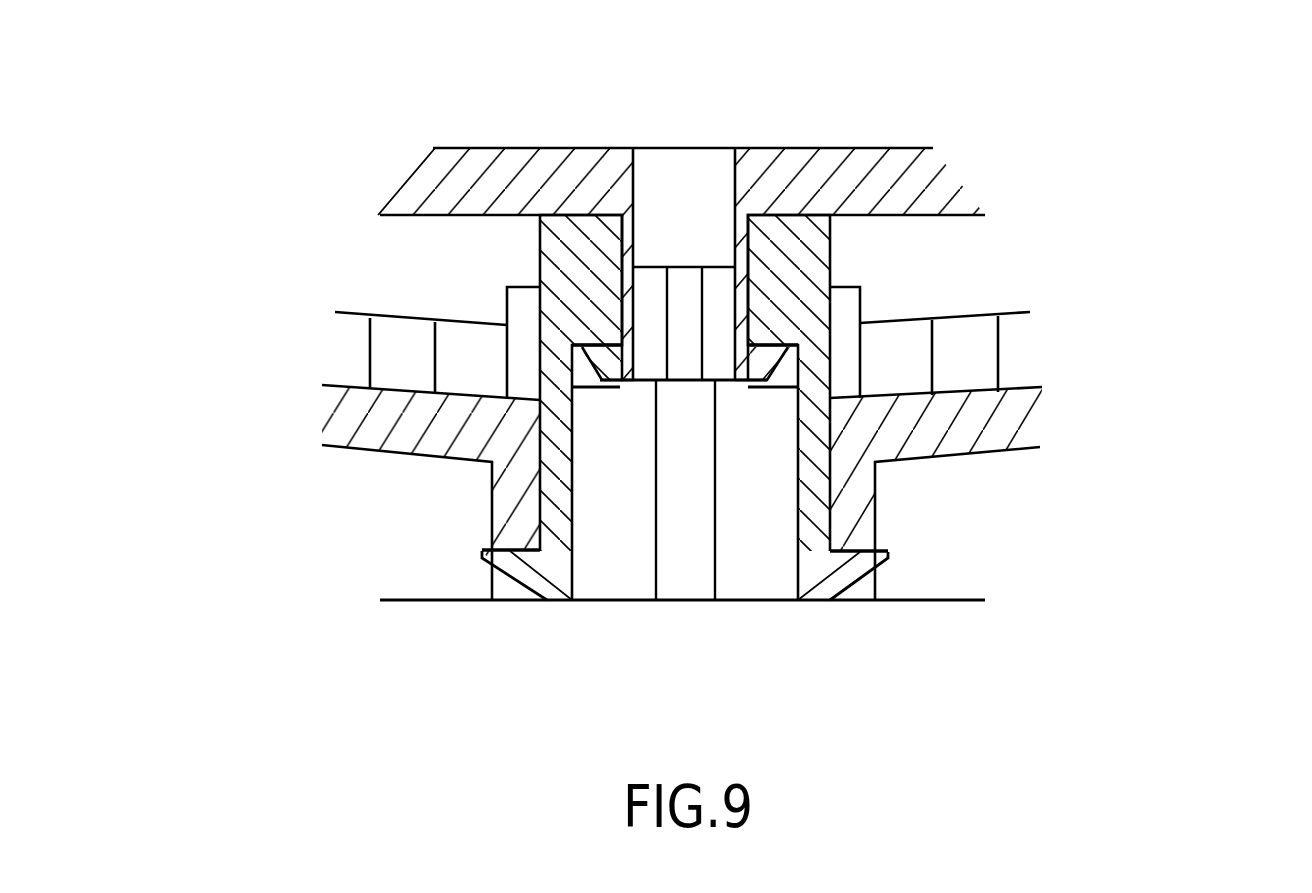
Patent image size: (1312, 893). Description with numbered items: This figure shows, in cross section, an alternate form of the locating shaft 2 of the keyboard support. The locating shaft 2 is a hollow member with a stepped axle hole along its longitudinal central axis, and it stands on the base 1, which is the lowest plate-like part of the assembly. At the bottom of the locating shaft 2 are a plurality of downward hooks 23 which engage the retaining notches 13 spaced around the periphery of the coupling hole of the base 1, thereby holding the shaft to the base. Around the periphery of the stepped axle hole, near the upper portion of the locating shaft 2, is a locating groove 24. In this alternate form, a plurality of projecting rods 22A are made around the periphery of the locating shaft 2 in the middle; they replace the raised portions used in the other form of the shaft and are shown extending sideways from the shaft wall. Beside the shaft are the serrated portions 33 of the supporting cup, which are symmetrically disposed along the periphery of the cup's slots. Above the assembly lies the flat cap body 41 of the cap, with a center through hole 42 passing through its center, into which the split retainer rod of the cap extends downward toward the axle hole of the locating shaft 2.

The base 1 is at (400, 435).
The locating shaft 2 is at (795, 285).
The retaining notches 13 is at (507, 590).
The projecting rods 22A is at (845, 360).
The downward hooks 23 is at (822, 570).
The locating groove 24 is at (583, 372).
The serrated portions 33 is at (383, 347).
The flat cap body 41 is at (902, 192).
The center through hole 42 is at (662, 195).